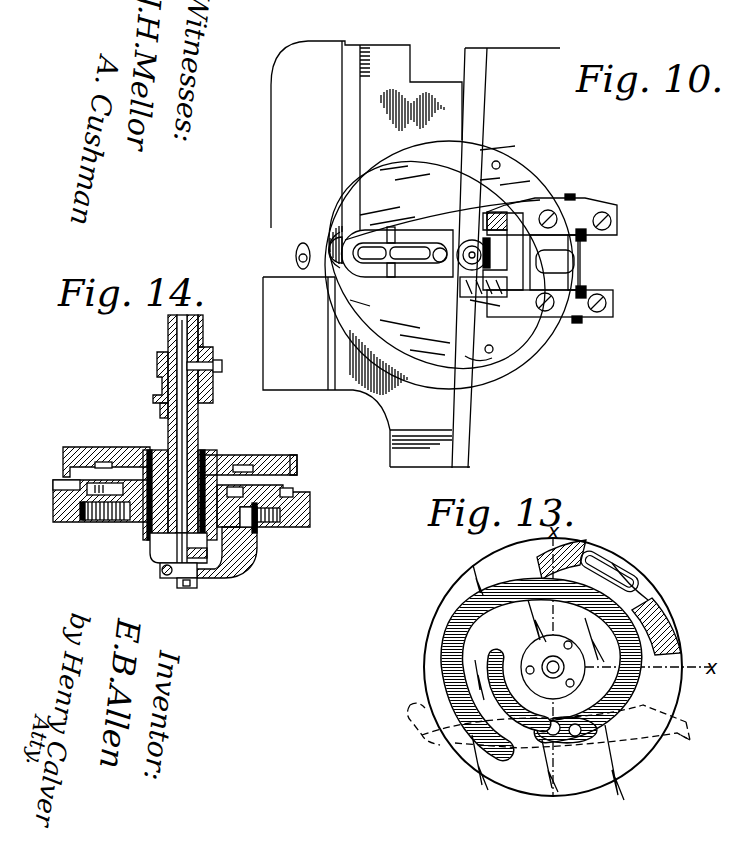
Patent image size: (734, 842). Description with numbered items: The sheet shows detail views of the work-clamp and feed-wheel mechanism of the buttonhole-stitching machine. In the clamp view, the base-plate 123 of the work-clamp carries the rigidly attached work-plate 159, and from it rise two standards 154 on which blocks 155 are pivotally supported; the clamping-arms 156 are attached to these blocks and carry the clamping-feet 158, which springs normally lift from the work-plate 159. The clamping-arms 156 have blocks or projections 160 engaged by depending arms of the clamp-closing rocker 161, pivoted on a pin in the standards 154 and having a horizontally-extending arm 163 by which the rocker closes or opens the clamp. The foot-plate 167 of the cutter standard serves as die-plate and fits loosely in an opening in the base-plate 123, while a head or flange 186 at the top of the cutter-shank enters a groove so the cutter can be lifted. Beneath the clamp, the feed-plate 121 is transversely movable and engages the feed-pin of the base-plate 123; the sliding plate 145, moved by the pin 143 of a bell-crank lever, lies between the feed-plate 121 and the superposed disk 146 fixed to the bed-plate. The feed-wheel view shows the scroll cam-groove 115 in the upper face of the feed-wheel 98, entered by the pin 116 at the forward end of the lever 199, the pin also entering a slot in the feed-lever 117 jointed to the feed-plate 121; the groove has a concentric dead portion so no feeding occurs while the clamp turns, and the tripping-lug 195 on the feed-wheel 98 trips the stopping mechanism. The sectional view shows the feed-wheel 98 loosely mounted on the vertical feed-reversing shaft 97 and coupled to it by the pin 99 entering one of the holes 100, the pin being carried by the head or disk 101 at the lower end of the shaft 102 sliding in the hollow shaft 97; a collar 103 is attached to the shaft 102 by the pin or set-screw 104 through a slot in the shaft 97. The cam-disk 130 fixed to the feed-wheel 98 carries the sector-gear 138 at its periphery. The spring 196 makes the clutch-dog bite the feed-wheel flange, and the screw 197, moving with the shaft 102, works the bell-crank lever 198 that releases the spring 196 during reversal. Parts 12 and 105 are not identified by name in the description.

In FIG. 10, the frame 12 is at (497, 258).
In FIG. 10, the slide or feed plate 121 is at (349, 353).
In FIG. 10, the base-plate of the work-clamp 123 is at (478, 210).
In FIG. 10, the pin 143 is at (302, 270).
In FIG. 10, the sliding plate 145 is at (277, 232).
In FIG. 10, the superposed disk 146 is at (491, 375).
In FIG. 10, the standards 154 is at (578, 248).
In FIG. 10, the blocks 155 is at (606, 212).
In FIG. 10, the clamping-arms 156 is at (553, 203).
In FIG. 10, the clamping-feet 158 is at (390, 240).
In FIG. 10, the work-plate 159 is at (347, 243).
In FIG. 10, the blocks or projections 160 is at (518, 212).
In FIG. 10, the clamp-closing rocker 161 is at (500, 213).
In FIG. 10, the horizontally-extending arm 163 is at (465, 290).
In FIG. 10, the foot-plate 167 is at (439, 263).
In FIG. 10, the head or flange 186 is at (463, 243).
In FIG. 14, the vertical feed-reversing shaft 97 is at (168, 408).
In FIG. 14, the feed-wheel 98 is at (310, 507).
In FIG. 13, the feed-wheel 98 is at (424, 667).
In FIG. 14, the pin 99 is at (147, 540).
In FIG. 14, the holes 100 is at (117, 517).
In FIG. 14, the head or disk 101 is at (153, 567).
In FIG. 14, the shaft 102 is at (178, 447).
In FIG. 14, the collar 103 is at (157, 362).
In FIG. 14, the pin or set-screw 104 is at (218, 370).
In FIG. 14, the collar 105 is at (210, 387).
In FIG. 14, the scroll cam-groove 115 is at (88, 473).
In FIG. 13, the scroll cam-groove 115 is at (632, 698).
In FIG. 13, the pin 116 is at (557, 737).
In FIG. 13, the feed-lever 117 is at (420, 748).
In FIG. 14, the cam-disk 130 is at (224, 456).
In FIG. 14, the mutilated or sector-gear 138 is at (299, 465).
In FIG. 13, the tripping-lug 195 is at (640, 545).
In FIG. 14, the spring 196 is at (255, 537).
In FIG. 14, the screw 197 is at (193, 582).
In FIG. 14, the bell-crank or angular lever 198 is at (238, 570).
In FIG. 13, the lever 199 is at (700, 744).